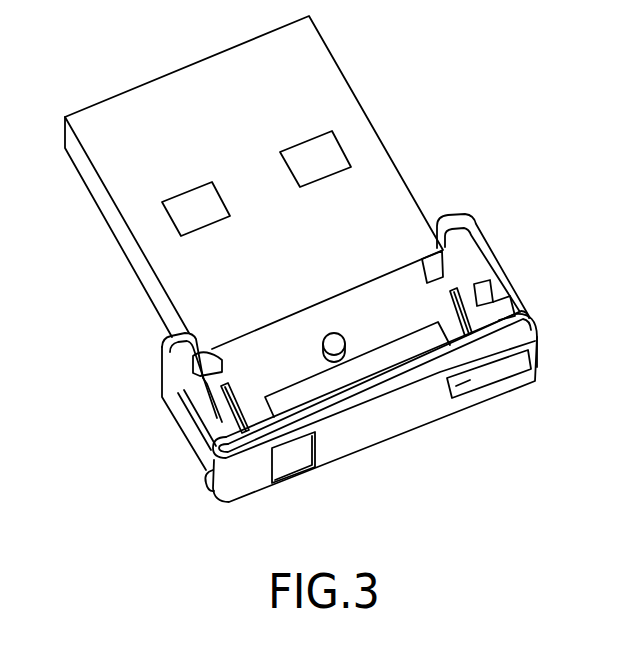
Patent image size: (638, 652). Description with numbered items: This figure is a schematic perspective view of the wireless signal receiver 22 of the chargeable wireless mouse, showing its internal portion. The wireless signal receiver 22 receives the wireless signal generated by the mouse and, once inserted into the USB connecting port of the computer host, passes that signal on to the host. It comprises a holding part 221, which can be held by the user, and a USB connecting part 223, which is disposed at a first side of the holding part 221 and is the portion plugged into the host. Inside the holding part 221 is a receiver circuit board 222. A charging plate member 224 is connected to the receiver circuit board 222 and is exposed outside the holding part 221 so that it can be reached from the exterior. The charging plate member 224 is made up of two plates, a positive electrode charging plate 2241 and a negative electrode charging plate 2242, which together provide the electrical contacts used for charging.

The wireless signal receiver 22 is at (461, 73).
The holding part 221 is at (380, 427).
The receiver circuit board 222 is at (440, 302).
The USB connecting part 223 is at (157, 110).
The charging plate member 224 is at (536, 354).
The positive electrode charging plate 2241 is at (240, 480).
The negative electrode charging plate 2242 is at (468, 387).